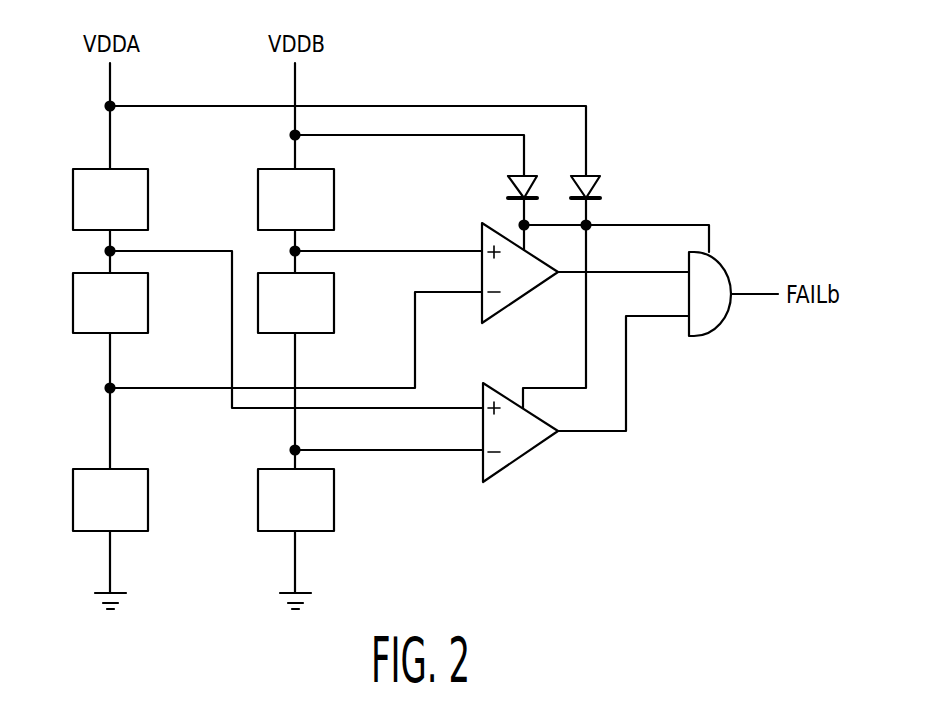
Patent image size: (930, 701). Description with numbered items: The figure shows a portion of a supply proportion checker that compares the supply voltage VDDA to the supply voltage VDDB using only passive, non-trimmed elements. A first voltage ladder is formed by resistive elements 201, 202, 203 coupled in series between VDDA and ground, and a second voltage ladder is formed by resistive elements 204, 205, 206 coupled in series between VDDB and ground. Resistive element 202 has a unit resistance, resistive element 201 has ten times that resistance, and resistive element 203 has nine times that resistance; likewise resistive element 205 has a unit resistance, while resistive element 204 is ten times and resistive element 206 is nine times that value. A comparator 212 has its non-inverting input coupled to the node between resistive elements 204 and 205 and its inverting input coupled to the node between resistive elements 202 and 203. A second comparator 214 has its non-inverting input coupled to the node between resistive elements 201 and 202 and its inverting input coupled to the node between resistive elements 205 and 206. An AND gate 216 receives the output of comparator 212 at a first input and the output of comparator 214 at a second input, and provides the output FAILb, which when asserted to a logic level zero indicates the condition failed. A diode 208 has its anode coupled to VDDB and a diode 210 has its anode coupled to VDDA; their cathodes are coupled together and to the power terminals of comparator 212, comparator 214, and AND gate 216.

The resistive element 201 is at (72, 197).
The resistive element 202 is at (72, 312).
The resistive element 203 is at (72, 510).
The resistive element 204 is at (273, 168).
The resistive element 205 is at (312, 335).
The resistive element 206 is at (334, 515).
The diode 208 is at (508, 185).
The diode 210 is at (597, 183).
The comparator 212 is at (482, 310).
The comparator 214 is at (527, 455).
The AND gate 216 is at (725, 272).